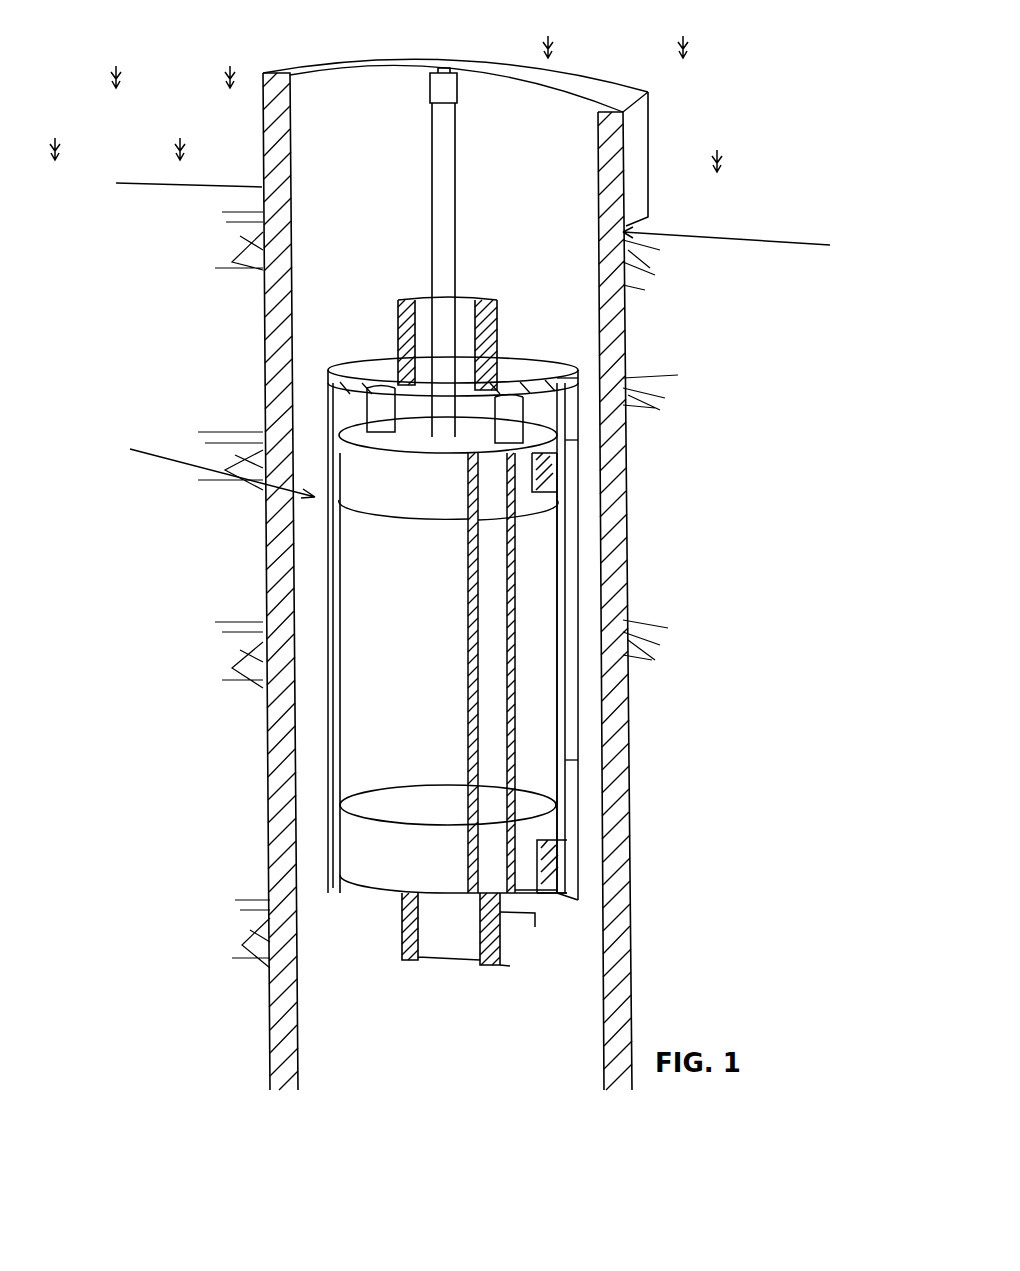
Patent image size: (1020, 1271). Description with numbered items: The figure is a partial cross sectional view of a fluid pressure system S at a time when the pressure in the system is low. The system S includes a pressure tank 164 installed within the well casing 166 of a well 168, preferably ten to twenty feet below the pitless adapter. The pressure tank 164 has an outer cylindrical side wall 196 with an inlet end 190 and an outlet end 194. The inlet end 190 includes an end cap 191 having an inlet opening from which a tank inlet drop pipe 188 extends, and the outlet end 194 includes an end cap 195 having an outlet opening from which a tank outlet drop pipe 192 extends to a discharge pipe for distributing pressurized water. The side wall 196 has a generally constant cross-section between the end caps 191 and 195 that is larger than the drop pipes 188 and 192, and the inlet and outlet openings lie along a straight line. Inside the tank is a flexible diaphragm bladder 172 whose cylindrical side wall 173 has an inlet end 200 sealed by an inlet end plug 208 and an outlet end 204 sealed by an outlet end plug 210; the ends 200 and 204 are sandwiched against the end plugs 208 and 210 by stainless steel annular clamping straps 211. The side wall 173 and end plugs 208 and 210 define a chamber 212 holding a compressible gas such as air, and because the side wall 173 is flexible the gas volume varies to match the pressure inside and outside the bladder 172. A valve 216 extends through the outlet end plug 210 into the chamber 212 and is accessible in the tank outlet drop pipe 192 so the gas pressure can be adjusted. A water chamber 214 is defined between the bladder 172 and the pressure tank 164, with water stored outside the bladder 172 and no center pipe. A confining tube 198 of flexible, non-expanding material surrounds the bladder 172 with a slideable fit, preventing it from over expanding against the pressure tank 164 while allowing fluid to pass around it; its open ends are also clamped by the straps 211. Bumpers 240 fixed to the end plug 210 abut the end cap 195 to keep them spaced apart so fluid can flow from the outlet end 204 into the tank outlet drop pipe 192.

The pressure tank 164 is at (600, 770).
The well casing 166 is at (275, 325).
The well 168 is at (330, 134).
The flexible diaphragm bladder 172 is at (545, 695).
The cylindrical side wall 173 is at (490, 577).
The tank inlet drop pipe 188 is at (500, 965).
The inlet end 190 is at (578, 883).
The end cap 191 is at (535, 927).
The tank outlet drop pipe 192 is at (503, 299).
The outlet end 194 is at (573, 380).
The end cap 195 is at (540, 368).
The outer cylindrical side wall 196 is at (495, 667).
The confining tube 198 is at (578, 765).
The inlet end 200 is at (500, 902).
The outlet end 204 is at (548, 445).
The inlet end plug 208 is at (360, 855).
The outlet end plug 210 is at (378, 480).
The annular clamping straps 211 is at (535, 480).
The chamber 212 is at (395, 600).
The water chamber 214 is at (343, 407).
The valve 216 is at (445, 205).
The bumpers 240 is at (327, 380).
The fluid pressure system S is at (214, 467).